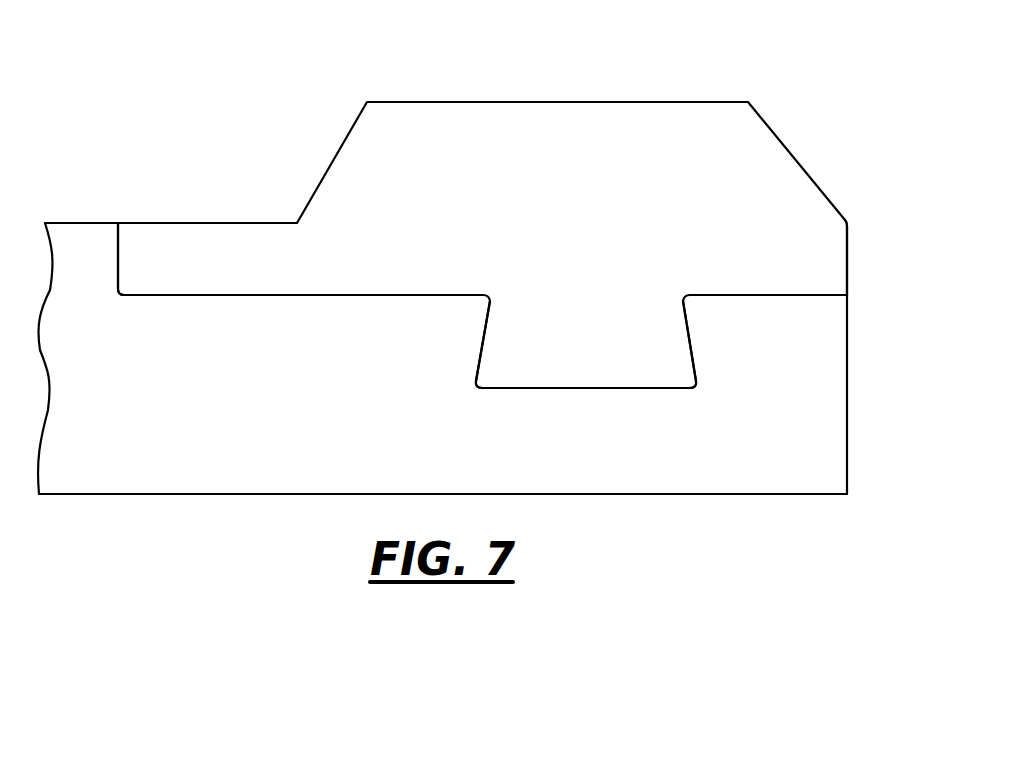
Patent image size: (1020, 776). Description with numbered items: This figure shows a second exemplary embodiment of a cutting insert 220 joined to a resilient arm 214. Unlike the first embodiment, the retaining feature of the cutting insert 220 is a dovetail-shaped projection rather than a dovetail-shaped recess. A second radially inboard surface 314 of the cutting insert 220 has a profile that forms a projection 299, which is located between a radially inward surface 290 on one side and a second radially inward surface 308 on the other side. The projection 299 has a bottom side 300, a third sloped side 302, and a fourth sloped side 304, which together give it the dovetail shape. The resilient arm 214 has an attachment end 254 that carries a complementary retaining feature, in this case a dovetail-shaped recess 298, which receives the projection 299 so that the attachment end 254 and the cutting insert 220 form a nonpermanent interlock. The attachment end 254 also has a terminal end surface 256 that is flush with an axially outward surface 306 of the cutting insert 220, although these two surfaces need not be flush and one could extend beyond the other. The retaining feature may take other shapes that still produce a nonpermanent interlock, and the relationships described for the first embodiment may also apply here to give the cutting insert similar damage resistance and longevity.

The cutting insert 220 is at (627, 72).
The resilient arm 214 is at (150, 507).
The attachment end 254 is at (277, 470).
The terminal end surface 256 is at (848, 405).
The radially inward surface 290 is at (254, 296).
The dovetail-shaped recess 298 is at (524, 390).
The projection 299 is at (600, 322).
The bottom side 300 is at (677, 387).
The third sloped side 302 is at (478, 348).
The fourth sloped side 304 is at (693, 343).
The axially outward surface 306 is at (848, 265).
The second radially inward surface 308 is at (782, 298).
The second radially inboard surface 314 is at (389, 306).